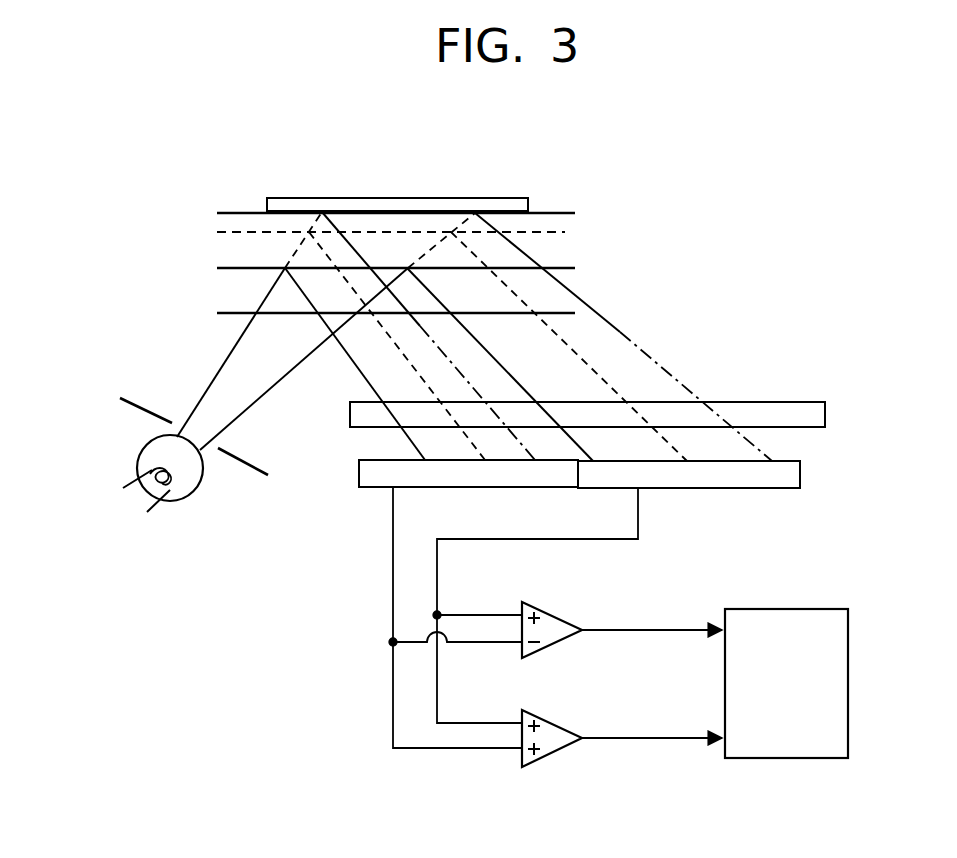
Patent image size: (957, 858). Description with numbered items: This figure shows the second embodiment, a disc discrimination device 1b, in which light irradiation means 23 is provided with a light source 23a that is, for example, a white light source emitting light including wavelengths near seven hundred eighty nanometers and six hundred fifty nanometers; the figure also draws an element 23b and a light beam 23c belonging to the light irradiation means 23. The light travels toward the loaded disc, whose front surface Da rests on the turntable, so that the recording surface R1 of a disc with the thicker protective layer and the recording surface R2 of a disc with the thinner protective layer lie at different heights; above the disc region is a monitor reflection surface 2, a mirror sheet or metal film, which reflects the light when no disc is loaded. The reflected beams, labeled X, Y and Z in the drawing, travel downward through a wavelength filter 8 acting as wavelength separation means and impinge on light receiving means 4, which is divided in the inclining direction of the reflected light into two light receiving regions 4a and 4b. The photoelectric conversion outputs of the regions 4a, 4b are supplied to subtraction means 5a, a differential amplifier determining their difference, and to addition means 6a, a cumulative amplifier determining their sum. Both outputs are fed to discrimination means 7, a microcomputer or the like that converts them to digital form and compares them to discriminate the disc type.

The disc discrimination device 1b is at (748, 282).
The monitor reflection surface 2 is at (403, 217).
The recording surface R1 is at (563, 232).
The recording surface R2 is at (565, 268).
The front surface of the disc Da is at (565, 313).
The reflected light beam X is at (541, 332).
The reflected light beam Y is at (470, 333).
The reflected light beam Z is at (618, 333).
The wavelength filter 8 is at (808, 401).
The light receiving means 4 is at (612, 504).
The light receiving region 4a is at (723, 482).
The light receiving region 4b is at (372, 490).
The subtraction means 5a is at (562, 616).
The addition means 6a is at (563, 727).
The discrimination means 7 is at (790, 608).
The light irradiation means 23 is at (191, 426).
The light source 23a is at (138, 448).
The slit plate 23b is at (250, 452).
The light beam 23c is at (193, 437).